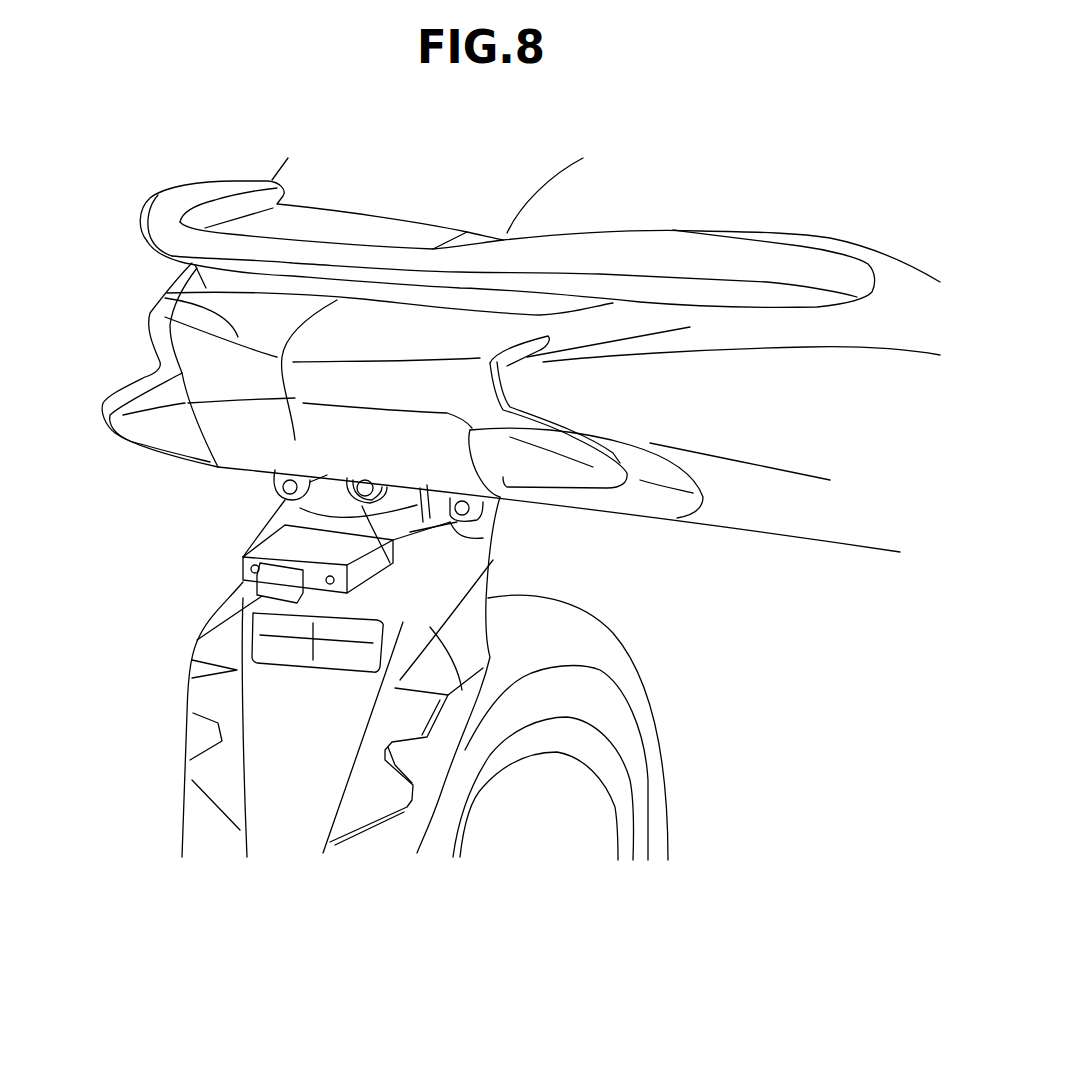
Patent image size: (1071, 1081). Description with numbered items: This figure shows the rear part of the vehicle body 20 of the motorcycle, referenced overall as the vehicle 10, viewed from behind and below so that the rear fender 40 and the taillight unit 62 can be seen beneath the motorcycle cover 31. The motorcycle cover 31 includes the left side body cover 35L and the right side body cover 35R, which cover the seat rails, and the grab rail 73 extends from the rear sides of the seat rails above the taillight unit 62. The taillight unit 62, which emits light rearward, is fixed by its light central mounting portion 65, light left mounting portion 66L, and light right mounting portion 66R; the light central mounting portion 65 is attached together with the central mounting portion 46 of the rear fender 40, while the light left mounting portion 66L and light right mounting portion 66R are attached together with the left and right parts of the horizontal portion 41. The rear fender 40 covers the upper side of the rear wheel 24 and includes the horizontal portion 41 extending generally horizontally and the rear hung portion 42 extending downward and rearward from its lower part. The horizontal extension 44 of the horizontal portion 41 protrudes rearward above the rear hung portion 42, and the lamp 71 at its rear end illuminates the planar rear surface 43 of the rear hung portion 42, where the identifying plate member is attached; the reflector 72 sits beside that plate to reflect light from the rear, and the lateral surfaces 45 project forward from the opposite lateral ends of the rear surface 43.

The vehicle 10 is at (735, 120).
The motorcycle body 20 is at (743, 703).
The rear wheel 24 is at (658, 828).
The motorcycle cover 31 is at (775, 388).
The left side body cover 35L is at (130, 378).
The right side body cover 35R is at (820, 503).
The rear fender 40 is at (180, 793).
The horizontal portion 41 is at (530, 523).
The rear hung portion 42 is at (293, 838).
The rear surface 43 is at (205, 697).
The horizontal extension 44 is at (303, 550).
The lateral surfaces 45 is at (423, 797).
The central mounting portion 46 is at (397, 488).
The taillight unit 62 is at (167, 294).
The light central mounting portion 65 is at (335, 515).
The light left mounting portion 66L is at (270, 493).
The light right mounting portion 66R is at (455, 538).
The lamp 71 is at (270, 597).
The reflector 72 is at (295, 657).
The grab rail 73 is at (167, 213).